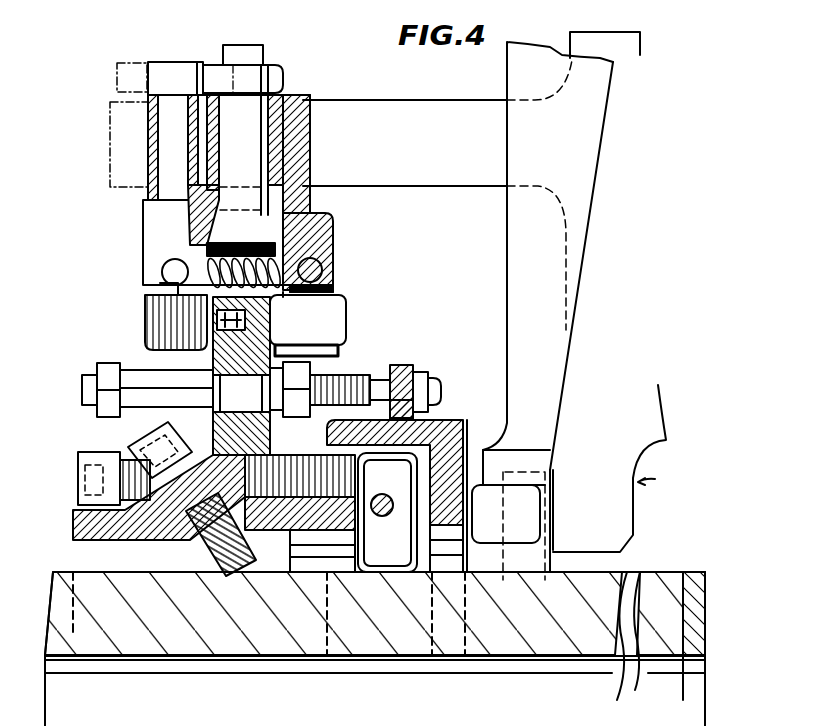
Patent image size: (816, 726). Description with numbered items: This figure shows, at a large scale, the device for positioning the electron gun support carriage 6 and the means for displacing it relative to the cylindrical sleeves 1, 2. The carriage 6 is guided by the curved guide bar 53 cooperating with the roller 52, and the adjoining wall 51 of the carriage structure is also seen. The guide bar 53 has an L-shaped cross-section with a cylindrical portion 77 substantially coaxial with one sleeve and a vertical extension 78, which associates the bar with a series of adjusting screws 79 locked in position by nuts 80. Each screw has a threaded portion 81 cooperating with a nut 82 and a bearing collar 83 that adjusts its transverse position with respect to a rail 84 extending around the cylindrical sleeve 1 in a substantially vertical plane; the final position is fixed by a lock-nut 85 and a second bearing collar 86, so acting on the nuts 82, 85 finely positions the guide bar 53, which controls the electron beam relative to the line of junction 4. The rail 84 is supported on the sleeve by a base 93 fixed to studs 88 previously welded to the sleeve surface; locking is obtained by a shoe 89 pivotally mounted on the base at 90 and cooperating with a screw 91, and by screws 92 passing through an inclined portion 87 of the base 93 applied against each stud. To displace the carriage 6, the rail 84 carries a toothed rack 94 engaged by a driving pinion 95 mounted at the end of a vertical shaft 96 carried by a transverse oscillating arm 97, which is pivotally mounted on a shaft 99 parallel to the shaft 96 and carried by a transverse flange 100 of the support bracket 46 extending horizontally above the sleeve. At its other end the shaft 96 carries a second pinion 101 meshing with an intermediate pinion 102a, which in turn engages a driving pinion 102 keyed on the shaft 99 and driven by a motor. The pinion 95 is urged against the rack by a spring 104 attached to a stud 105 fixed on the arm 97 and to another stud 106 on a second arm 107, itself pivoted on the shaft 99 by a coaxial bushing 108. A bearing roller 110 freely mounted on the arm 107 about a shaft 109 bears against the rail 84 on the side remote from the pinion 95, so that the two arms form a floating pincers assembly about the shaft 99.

The cylindrical sleeve 1 is at (662, 572).
The cylindrical sleeve 2 is at (693, 572).
The line of junction 4 is at (672, 572).
The carriage 6 is at (612, 468).
The support bracket 46 is at (620, 48).
The housing wall 51 is at (578, 262).
The roller 52 is at (530, 493).
The curved guide bar 53 is at (480, 452).
The cylindrical portion 77 is at (483, 440).
The vertical extension 78 is at (425, 375).
The adjusting screw 79 is at (430, 410).
The nut 80 is at (441, 382).
The threaded portion 81 is at (400, 366).
The nut 82 is at (340, 354).
The bearing collar 83 is at (305, 366).
The rail 84 is at (97, 378).
The lock-nut 85 is at (195, 371).
The second bearing collar 86 is at (213, 385).
The clamp arm 87 is at (150, 540).
The stud 88 is at (292, 573).
The shoe 89 is at (355, 565).
The pivot 90 is at (390, 512).
The screw 91 is at (78, 462).
The screw 92 is at (150, 437).
The base 93 is at (120, 497).
The toothed rack 94 is at (217, 335).
The driving pinion 95 is at (155, 297).
The vertical shaft 96 is at (165, 152).
The transverse oscillating arm 97 is at (143, 214).
The shaft 99 is at (265, 50).
The transverse flange 100 is at (458, 246).
The second pinion 101 is at (162, 72).
The driving pinion 102 is at (283, 78).
The intermediate pinion 102a is at (117, 75).
The spring 104 is at (335, 240).
The stud 105 is at (170, 260).
The stud 106 is at (318, 268).
The second arm 107 is at (333, 281).
The coaxial bushing 108 is at (300, 100).
The shaft 109 is at (335, 293).
The bearing roller 110 is at (337, 320).